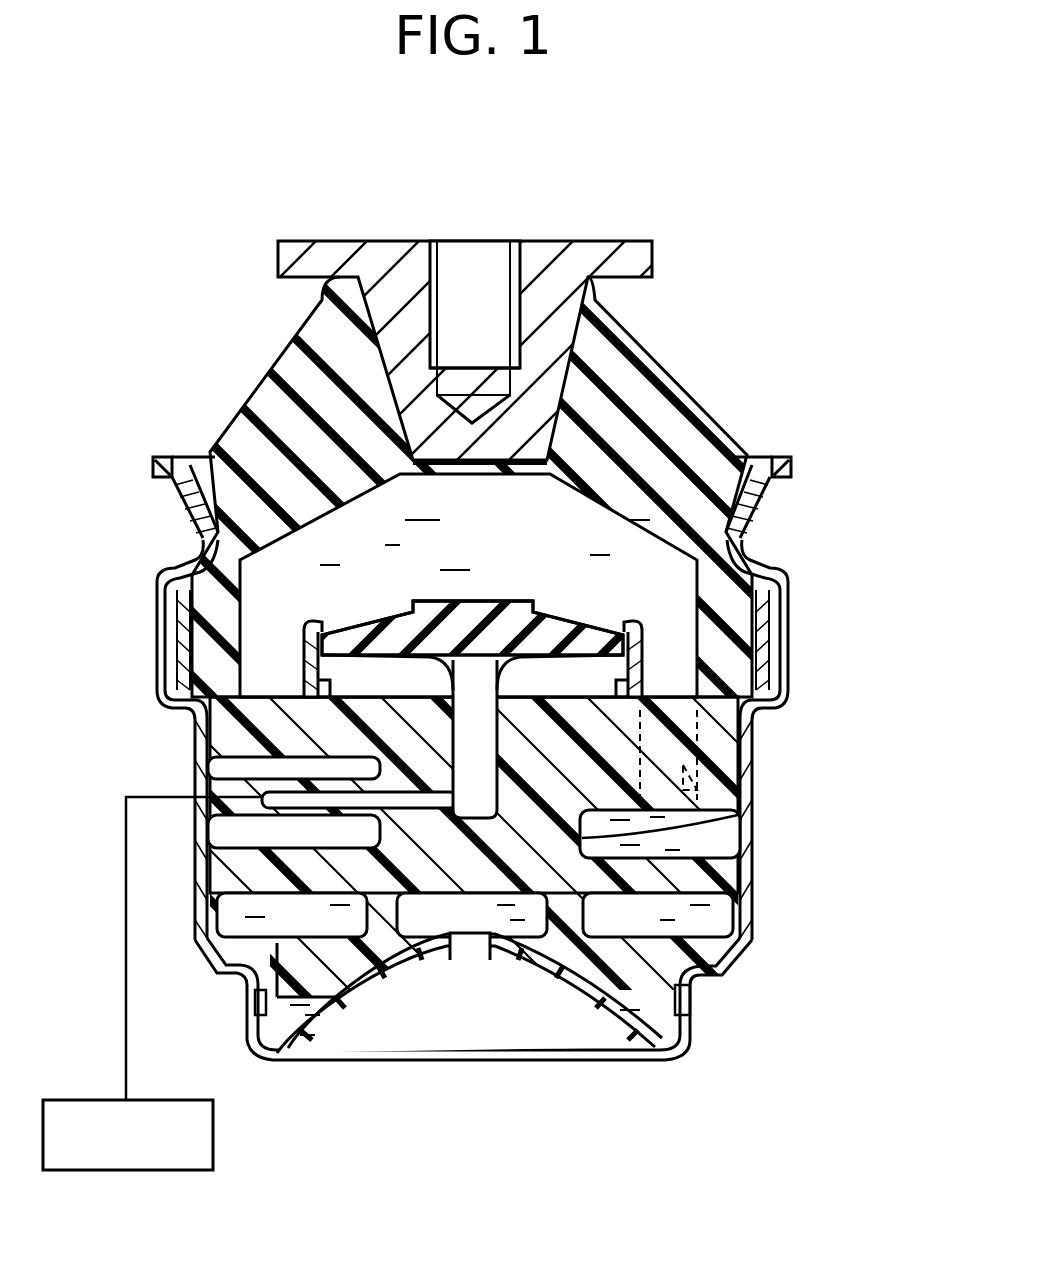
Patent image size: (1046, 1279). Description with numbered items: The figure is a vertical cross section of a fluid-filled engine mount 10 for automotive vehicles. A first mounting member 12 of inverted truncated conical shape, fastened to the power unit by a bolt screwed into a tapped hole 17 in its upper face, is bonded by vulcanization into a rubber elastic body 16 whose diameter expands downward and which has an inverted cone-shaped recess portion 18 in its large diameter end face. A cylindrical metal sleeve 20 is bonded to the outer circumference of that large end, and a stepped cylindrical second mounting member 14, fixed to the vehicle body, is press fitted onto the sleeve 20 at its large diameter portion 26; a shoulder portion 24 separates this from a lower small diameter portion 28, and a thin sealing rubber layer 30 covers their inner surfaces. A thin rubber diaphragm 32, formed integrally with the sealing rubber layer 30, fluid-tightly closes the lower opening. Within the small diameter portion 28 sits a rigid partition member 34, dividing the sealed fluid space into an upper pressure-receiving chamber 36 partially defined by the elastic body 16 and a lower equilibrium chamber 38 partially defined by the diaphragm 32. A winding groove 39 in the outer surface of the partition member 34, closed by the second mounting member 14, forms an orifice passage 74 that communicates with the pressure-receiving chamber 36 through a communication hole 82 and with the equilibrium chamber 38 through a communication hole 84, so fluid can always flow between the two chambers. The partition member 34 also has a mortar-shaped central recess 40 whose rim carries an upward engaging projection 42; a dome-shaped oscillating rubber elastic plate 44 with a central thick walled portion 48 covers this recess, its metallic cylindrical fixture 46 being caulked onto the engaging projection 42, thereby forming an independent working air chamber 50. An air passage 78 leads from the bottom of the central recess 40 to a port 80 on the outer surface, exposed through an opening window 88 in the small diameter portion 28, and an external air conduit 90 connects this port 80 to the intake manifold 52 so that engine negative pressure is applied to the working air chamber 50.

The engine mount 10 is at (822, 183).
The first mounting member 12 is at (612, 245).
The second mounting member 14 is at (828, 612).
The rubber elastic body 16 is at (680, 396).
The tapped hole 17 is at (510, 283).
The recess portion 18 is at (238, 452).
The metal sleeve 20 is at (752, 518).
The shoulder portion 24 is at (780, 703).
The large diameter portion 26 is at (785, 593).
The small diameter portion 28 is at (776, 805).
The sealing rubber layer 30 is at (775, 642).
The diaphragm 32 is at (574, 972).
The partition member 34 is at (268, 670).
The pressure-receiving chamber 36 is at (526, 528).
The equilibrium chamber 38 is at (424, 922).
The groove 39 is at (705, 828).
The central recess 40 is at (555, 650).
The engaging projection 42 is at (646, 632).
The oscillating rubber elastic plate 44 is at (382, 628).
The cylindrical fixture 46 is at (306, 640).
The central thick walled portion 48 is at (455, 606).
The working air chamber 50 is at (459, 743).
The intake manifold 52 is at (198, 1102).
The orifice passage 74 is at (740, 850).
The air passage 78 is at (262, 805).
The port 80 is at (262, 792).
The communication hole 82 is at (748, 768).
The communication hole 84 is at (556, 940).
The opening window 88 is at (200, 742).
The air conduit 90 is at (126, 997).